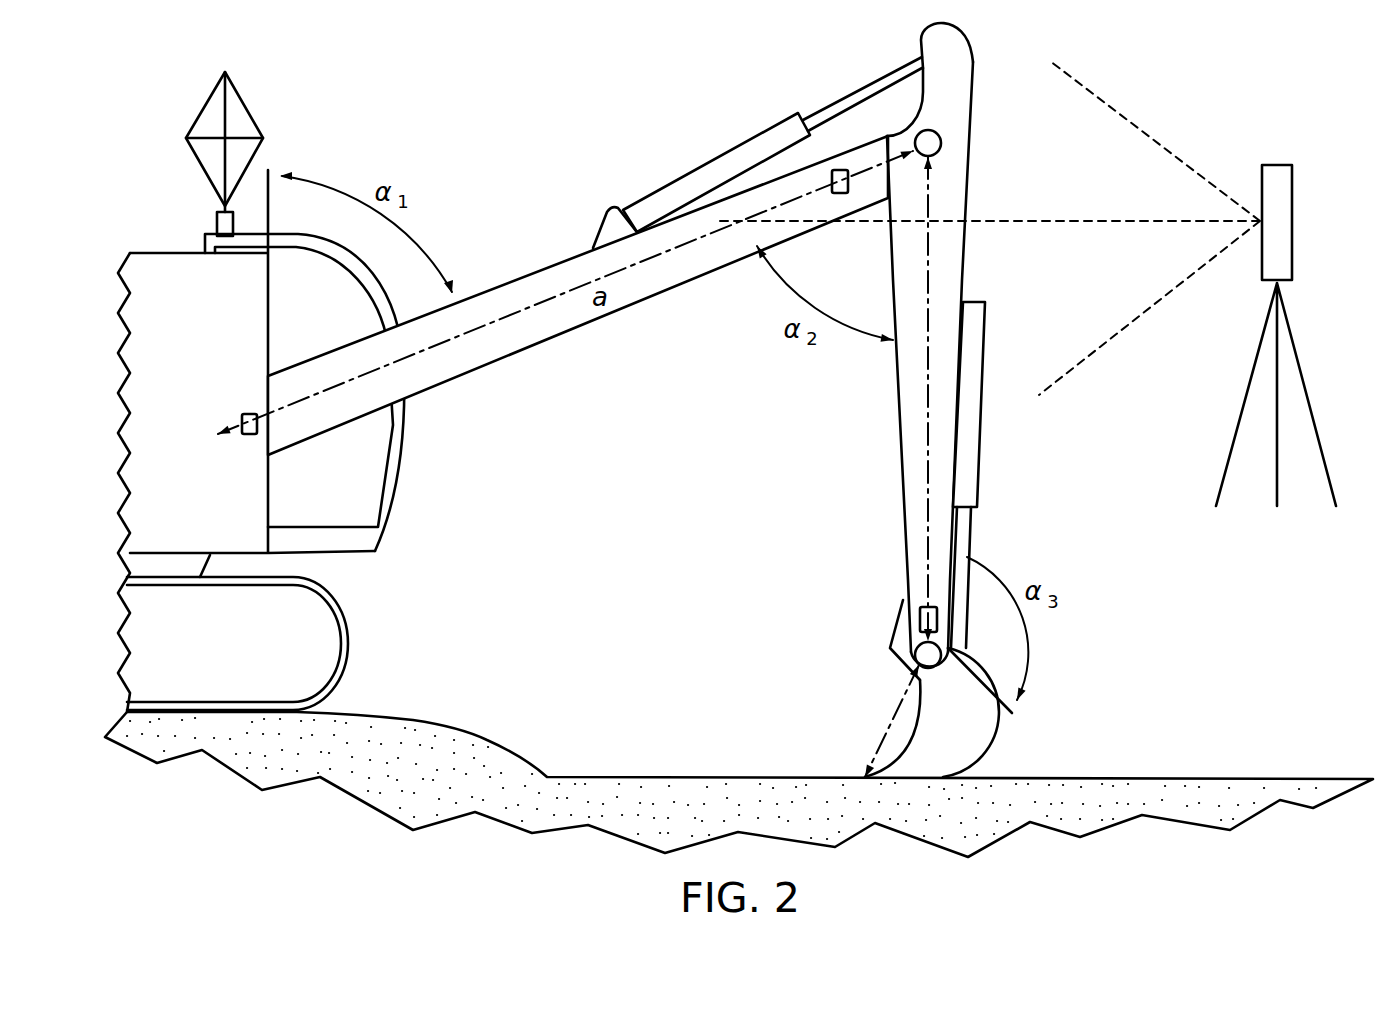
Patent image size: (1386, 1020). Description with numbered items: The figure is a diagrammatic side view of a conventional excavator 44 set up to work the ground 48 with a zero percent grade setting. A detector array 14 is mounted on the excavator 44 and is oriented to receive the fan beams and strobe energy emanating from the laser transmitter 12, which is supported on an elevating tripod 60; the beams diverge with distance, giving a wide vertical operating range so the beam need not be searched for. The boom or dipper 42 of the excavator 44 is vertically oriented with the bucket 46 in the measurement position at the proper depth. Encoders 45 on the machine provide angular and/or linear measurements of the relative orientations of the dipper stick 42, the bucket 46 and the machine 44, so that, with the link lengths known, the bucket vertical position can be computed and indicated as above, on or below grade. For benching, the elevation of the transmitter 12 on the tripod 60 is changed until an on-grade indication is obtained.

The laser transmitter 12 is at (1292, 207).
The detector array 14 is at (247, 100).
The dipper 42 is at (905, 397).
The excavator 44 is at (185, 358).
The encoders 45 is at (242, 420).
The bucket 46 is at (990, 743).
The ground 48 is at (1186, 779).
The elevating tripod 60 is at (1292, 338).